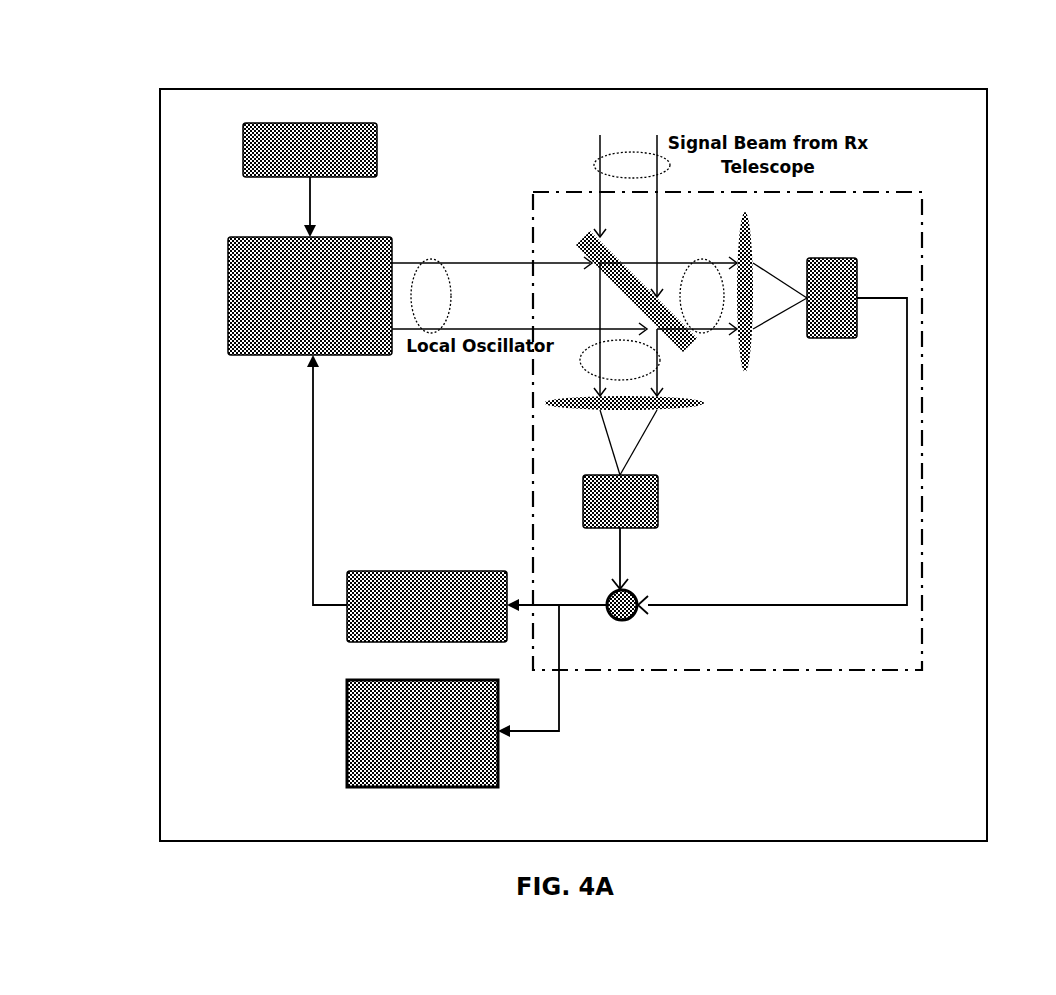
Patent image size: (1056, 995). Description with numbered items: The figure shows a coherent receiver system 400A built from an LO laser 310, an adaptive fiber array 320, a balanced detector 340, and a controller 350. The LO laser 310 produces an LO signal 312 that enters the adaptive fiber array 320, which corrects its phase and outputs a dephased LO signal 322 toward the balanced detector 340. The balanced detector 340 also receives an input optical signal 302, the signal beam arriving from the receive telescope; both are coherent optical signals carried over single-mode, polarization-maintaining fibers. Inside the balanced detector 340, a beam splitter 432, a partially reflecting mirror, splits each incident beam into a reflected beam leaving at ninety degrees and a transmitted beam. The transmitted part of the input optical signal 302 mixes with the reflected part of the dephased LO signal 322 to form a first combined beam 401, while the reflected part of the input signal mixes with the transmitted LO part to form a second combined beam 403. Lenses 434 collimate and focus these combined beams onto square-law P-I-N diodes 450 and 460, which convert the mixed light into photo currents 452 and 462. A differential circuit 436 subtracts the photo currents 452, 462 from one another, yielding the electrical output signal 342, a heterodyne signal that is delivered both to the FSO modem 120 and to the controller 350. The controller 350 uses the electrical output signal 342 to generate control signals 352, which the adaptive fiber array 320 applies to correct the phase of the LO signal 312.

The coherent receiver system 400A is at (115, 85).
The LO laser 310 is at (310, 150).
The LO signal 312 is at (324, 207).
The adaptive fiber array 320 is at (310, 296).
The dephased LO signal 322 is at (431, 296).
The input optical signal 302 is at (632, 165).
The beam splitter 432 is at (576, 240).
The second combined beam 403 is at (702, 296).
The first combined beam 401 is at (620, 360).
The optical couplers 434 is at (743, 385).
The P-I-N diode 450 is at (805, 298).
The photo current 452 is at (772, 456).
The P-I-N diode 460 is at (620, 469).
The photo current 462 is at (633, 558).
The differential circuit 436 is at (638, 623).
The electrical output signal 342 is at (552, 659).
The balanced detector 340 is at (727, 446).
The control signals 352 is at (328, 480).
The controller 350 is at (427, 606).
The FSO modem 120 is at (422, 733).